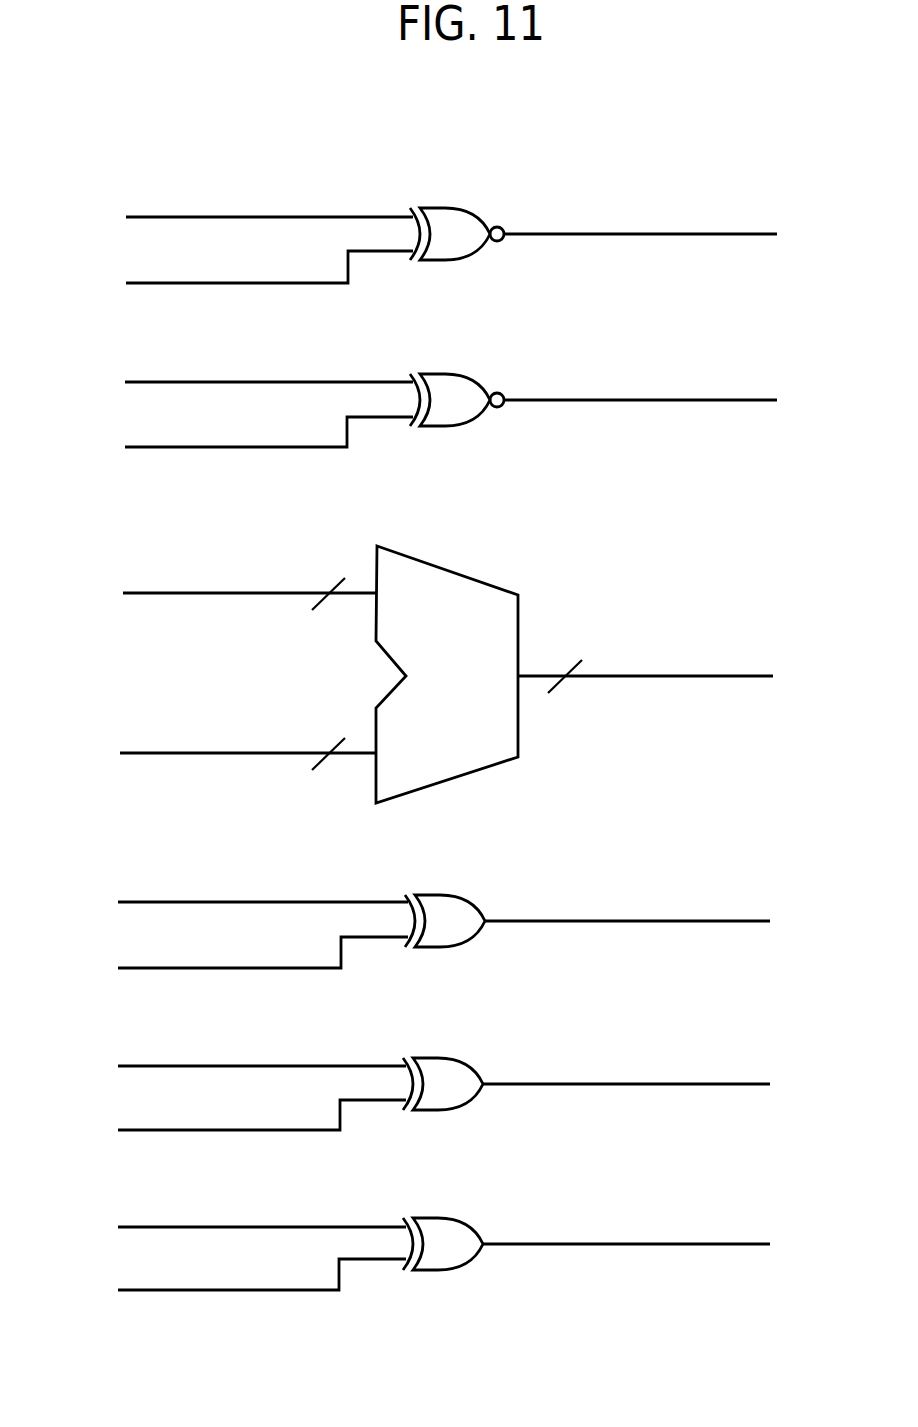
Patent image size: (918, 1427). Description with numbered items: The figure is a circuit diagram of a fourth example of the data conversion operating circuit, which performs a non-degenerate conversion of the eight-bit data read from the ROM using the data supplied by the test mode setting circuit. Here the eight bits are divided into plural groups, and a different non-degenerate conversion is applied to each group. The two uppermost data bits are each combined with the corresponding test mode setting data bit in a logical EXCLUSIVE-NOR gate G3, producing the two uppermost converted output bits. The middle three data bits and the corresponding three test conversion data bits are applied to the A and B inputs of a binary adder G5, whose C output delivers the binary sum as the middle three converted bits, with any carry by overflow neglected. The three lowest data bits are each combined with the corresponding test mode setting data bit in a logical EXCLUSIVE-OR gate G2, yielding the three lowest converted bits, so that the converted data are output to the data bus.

The logical EXCLUSIVE-NOR gate G3 is at (451, 311).
The binary adder G5 is at (446, 665).
The logical EXCLUSIVE-OR gate G2 is at (444, 1076).